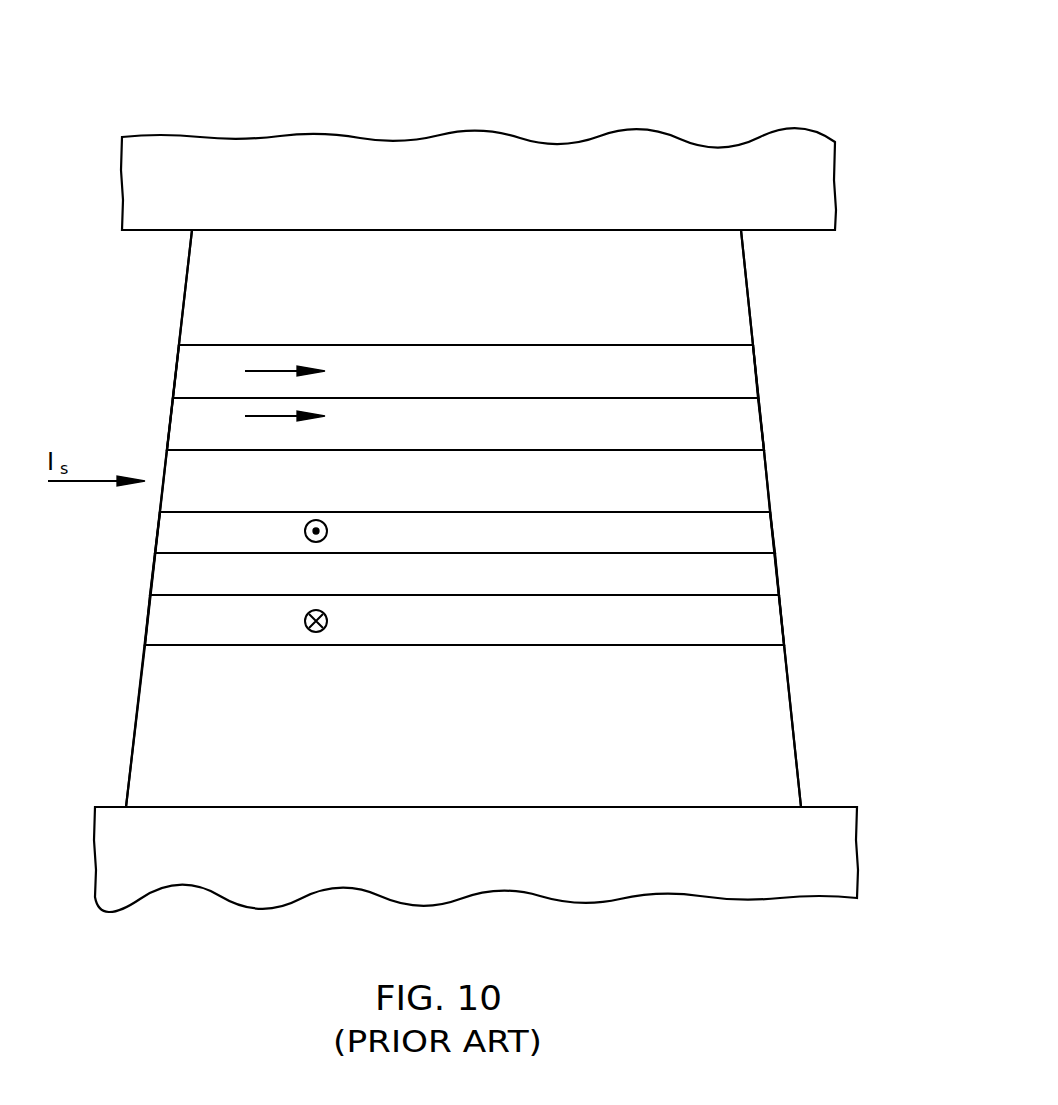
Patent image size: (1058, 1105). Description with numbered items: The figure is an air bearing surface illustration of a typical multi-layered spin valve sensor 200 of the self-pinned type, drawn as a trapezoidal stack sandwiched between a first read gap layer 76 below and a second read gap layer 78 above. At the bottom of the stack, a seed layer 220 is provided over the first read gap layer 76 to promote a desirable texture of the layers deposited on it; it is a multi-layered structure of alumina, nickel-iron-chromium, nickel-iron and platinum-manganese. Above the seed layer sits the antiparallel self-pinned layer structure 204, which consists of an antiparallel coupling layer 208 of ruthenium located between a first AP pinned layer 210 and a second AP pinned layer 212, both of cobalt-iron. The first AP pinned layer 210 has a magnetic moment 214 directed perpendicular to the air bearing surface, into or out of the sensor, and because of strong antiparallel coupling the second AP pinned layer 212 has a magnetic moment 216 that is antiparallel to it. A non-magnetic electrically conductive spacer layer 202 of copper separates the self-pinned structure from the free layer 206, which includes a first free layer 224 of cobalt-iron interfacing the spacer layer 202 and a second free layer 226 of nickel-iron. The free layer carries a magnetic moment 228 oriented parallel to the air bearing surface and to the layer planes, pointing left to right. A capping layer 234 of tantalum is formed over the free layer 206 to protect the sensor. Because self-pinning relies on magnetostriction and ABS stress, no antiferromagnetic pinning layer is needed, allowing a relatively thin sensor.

The spin valve sensor 200 is at (88, 805).
The free layer 206 is at (158, 448).
The antiparallel self-pinned layer structure 204 is at (69, 511).
The second read gap layer 78 is at (815, 178).
The first read gap layer 76 is at (760, 883).
The capping layer 234 is at (748, 293).
The second free layer 226 is at (758, 372).
The first free layer 224 is at (762, 423).
The spacer layer 202 is at (766, 476).
The second AP pinned layer 212 is at (771, 531).
The antiparallel coupling layer 208 is at (777, 579).
The first AP pinned layer 210 is at (781, 623).
The seed layer 220 is at (793, 721).
The magnetic moment 228 is at (277, 372).
The magnetic moment 216 is at (304, 531).
The magnetic moment 214 is at (304, 621).